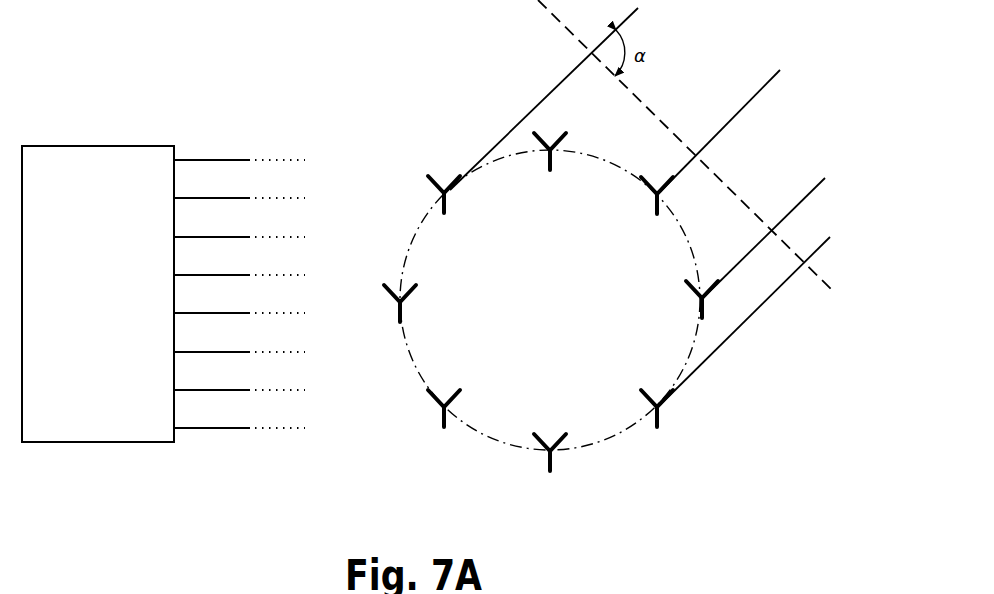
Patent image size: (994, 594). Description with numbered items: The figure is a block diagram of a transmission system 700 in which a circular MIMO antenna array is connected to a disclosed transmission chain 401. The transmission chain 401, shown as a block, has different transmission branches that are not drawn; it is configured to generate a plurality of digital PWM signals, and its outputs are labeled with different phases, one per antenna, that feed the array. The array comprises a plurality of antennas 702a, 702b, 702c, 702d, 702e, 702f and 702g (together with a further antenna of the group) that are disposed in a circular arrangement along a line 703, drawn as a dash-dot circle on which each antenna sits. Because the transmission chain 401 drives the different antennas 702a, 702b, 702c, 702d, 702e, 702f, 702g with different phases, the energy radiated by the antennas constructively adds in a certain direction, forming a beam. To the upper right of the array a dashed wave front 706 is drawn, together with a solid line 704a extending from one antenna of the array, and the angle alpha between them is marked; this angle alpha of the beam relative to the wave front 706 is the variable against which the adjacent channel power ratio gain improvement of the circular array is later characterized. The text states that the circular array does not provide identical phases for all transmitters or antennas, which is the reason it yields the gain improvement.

The transmission system 700 is at (92, 95).
The transmission chain 401 is at (114, 306).
The antenna 702a is at (418, 176).
The antenna 702b is at (388, 328).
The antenna 702c is at (434, 440).
The antenna 702d is at (528, 481).
The antenna 702e is at (630, 390).
The antenna 702f is at (676, 306).
The antenna 702g is at (551, 185).
The line 703 is at (410, 247).
The beam direction line 704a is at (542, 98).
The wave front 706 is at (551, 14).